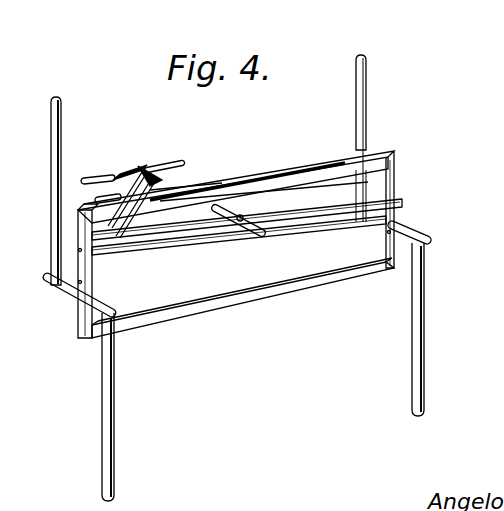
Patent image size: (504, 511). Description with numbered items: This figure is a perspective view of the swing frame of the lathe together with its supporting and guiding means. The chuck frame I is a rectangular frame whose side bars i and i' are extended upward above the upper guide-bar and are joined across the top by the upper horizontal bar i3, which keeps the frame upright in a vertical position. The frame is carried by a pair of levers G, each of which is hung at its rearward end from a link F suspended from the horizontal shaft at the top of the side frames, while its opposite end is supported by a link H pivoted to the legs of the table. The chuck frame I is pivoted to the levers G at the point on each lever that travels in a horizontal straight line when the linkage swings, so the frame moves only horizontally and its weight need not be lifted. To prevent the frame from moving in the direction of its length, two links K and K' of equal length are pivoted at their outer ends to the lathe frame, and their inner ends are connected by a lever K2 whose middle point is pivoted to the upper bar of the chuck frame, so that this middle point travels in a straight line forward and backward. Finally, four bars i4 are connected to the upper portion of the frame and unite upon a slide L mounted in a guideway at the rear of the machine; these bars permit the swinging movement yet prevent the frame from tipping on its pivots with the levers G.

The links F is at (51, 165).
The levers G is at (65, 300).
The links H is at (114, 378).
The chuck frame I is at (232, 298).
The side bar i is at (94, 271).
The side bar i' is at (236, 209).
The upper horizontal bar i3 is at (270, 180).
The bars i4 is at (110, 190).
The link K is at (247, 236).
The link K' is at (239, 236).
The lever K2 is at (247, 228).
The slide L is at (141, 168).